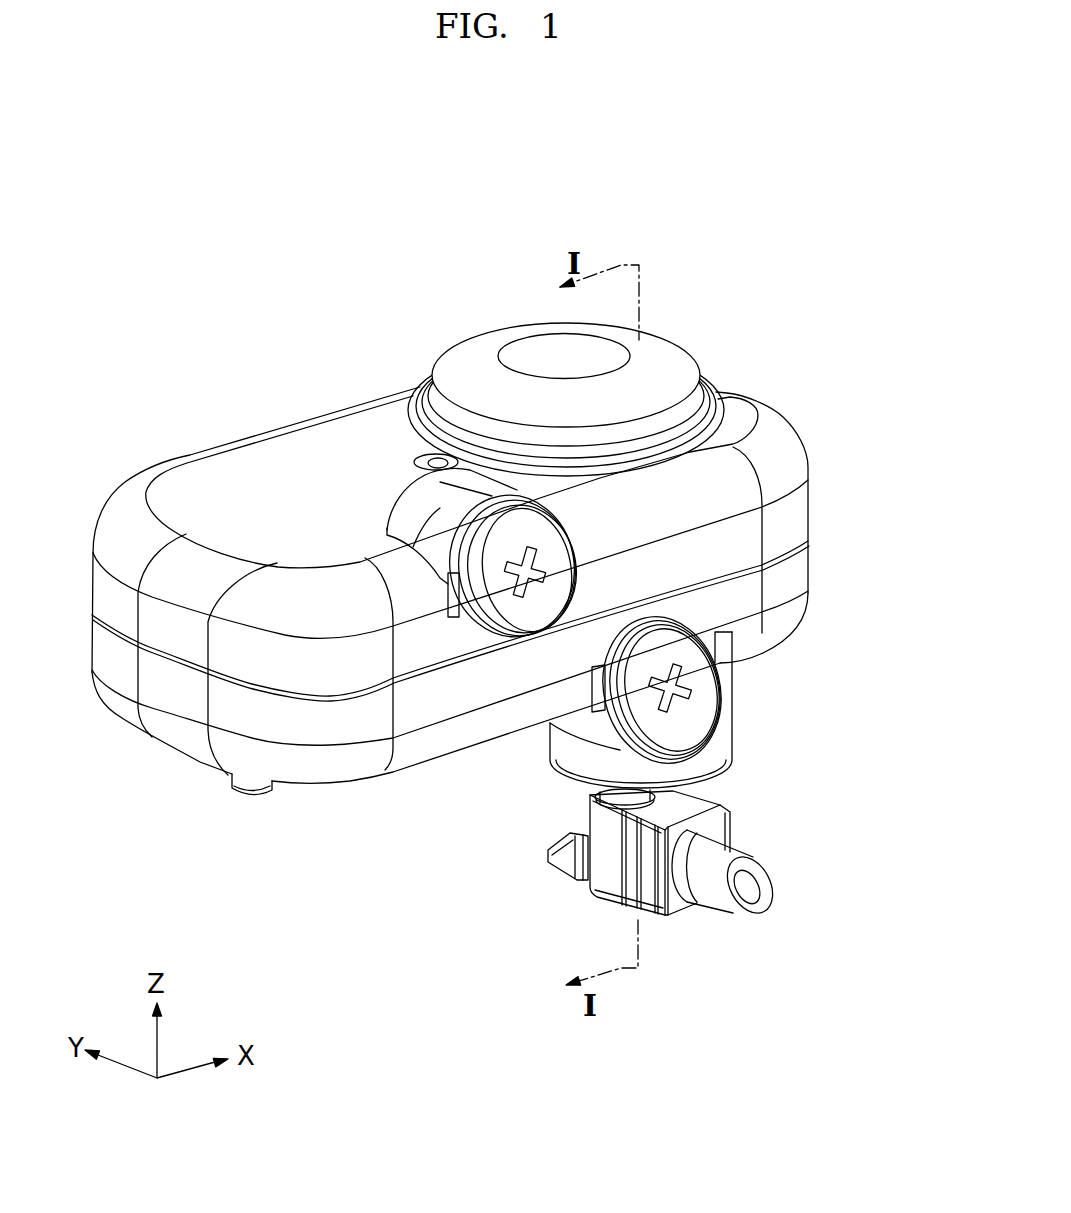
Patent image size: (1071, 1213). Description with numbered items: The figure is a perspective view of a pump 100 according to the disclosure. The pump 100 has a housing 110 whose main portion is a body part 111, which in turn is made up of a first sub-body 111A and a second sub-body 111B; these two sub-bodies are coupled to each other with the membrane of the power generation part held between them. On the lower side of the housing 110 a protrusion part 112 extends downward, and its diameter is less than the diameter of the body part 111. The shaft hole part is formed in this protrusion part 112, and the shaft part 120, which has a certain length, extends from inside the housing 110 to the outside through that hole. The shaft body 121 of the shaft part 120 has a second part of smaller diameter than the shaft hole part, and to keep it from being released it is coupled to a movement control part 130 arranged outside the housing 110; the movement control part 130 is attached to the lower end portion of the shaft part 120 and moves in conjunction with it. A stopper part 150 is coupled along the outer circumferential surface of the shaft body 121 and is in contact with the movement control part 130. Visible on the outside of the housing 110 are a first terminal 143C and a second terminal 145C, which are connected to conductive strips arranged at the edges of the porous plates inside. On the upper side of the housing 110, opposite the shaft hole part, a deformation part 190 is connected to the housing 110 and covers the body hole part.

The pump 100 is at (264, 313).
The housing 110 is at (815, 432).
The body part 111 is at (194, 823).
The first sub-body 111A is at (116, 613).
The second sub-body 111B is at (180, 708).
The protrusion part 112 is at (714, 741).
The shaft part 120 is at (653, 800).
The shaft body 121 is at (749, 885).
The movement control part 130 is at (745, 831).
The first terminal 143C is at (555, 540).
The second terminal 145C is at (708, 689).
The stopper part 150 is at (618, 802).
The deformation part 190 is at (541, 346).